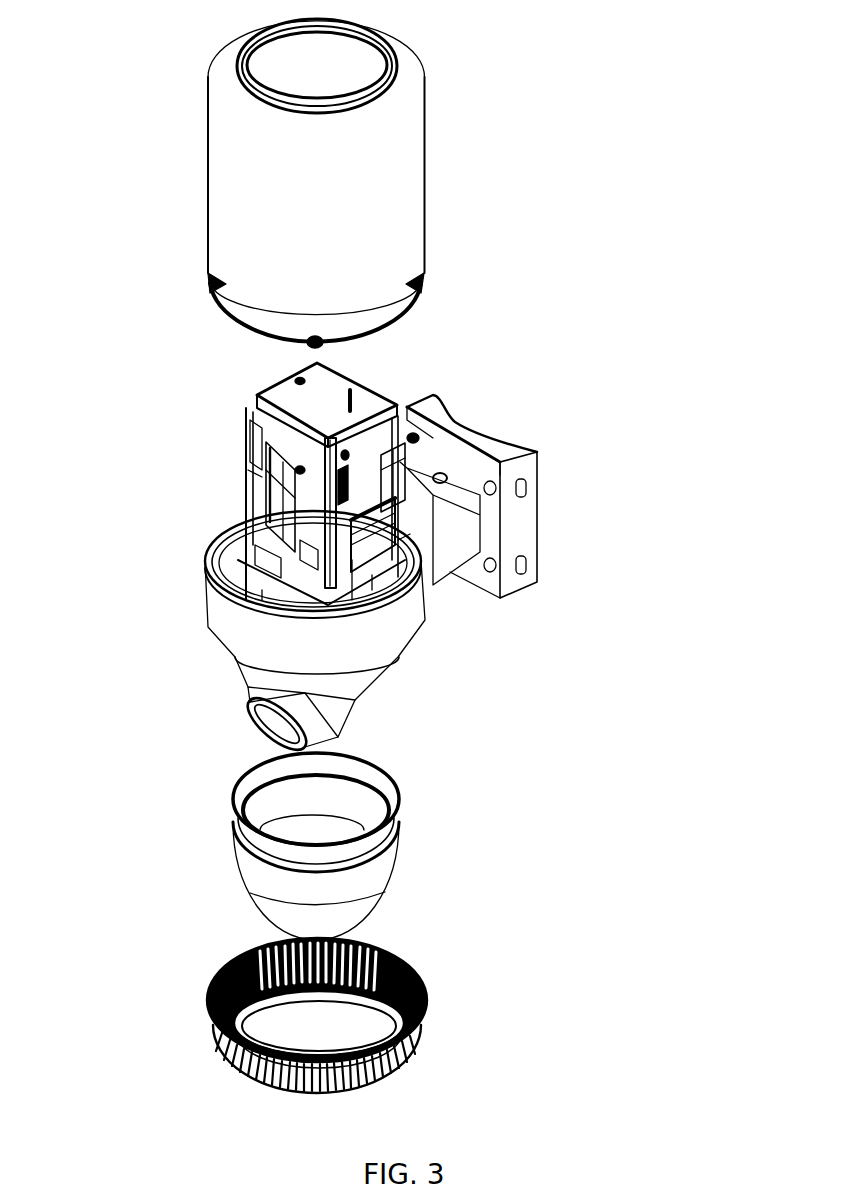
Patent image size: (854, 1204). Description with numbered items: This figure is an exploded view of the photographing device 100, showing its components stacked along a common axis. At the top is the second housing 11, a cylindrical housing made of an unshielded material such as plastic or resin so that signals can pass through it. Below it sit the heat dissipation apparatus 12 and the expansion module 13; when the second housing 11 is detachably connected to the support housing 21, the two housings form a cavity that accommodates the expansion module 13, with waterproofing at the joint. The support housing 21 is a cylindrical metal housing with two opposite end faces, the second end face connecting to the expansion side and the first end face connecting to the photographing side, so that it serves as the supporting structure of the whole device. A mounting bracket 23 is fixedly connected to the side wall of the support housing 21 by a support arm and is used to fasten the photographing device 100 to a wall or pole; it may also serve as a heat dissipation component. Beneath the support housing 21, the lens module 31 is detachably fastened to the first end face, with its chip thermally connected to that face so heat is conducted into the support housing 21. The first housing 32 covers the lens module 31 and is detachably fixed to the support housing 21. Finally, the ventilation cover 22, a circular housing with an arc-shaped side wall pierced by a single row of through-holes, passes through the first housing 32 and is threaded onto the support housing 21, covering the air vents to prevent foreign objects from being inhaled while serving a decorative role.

The photographing device 100 is at (607, 190).
The second housing 11 is at (260, 194).
The heat dissipation apparatus 12 is at (255, 392).
The expansion module 13 is at (247, 466).
The support housing 21 is at (235, 624).
The ventilation cover 22 is at (212, 1000).
The mounting bracket 23 is at (518, 450).
The lens module 31 is at (250, 713).
The first housing 32 is at (252, 872).